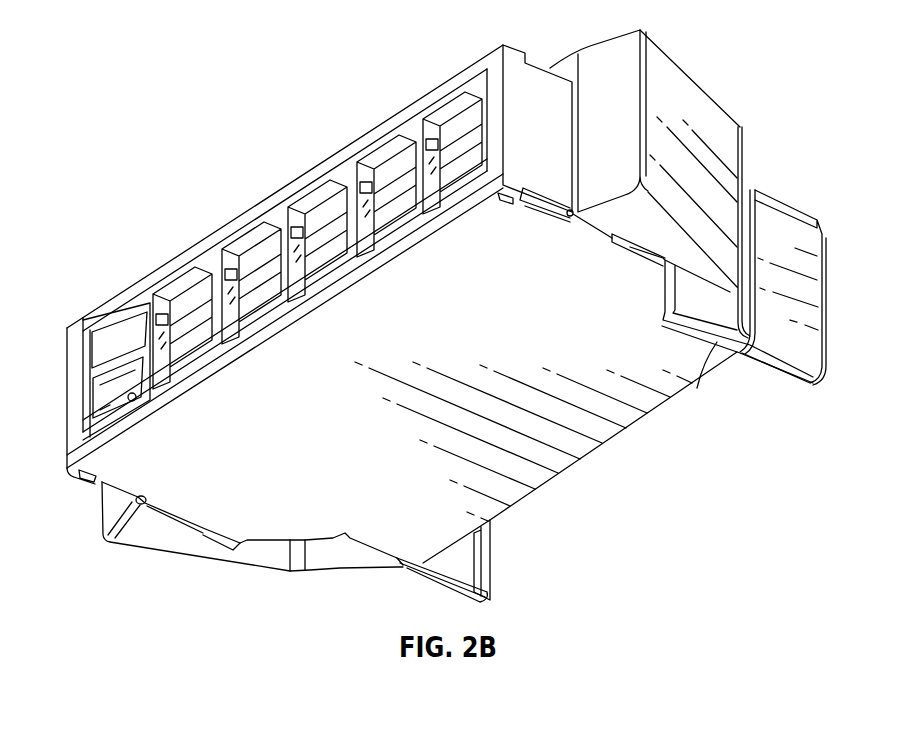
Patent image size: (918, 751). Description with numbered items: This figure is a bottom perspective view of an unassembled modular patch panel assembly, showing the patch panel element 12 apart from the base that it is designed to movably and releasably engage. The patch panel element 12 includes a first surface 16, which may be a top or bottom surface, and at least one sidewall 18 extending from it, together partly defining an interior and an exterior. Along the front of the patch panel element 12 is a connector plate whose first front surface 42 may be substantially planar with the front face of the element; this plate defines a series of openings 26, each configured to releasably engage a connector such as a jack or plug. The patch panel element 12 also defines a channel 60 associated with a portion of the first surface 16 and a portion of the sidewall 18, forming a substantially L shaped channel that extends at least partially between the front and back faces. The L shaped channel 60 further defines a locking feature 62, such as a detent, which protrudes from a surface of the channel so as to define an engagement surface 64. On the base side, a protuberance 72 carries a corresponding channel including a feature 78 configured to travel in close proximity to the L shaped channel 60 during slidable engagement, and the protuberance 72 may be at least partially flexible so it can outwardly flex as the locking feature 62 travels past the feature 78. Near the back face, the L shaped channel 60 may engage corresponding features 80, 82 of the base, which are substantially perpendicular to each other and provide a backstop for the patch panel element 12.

The patch panel element 12 is at (537, 150).
The first surface 16 is at (363, 459).
The sidewall 18 is at (522, 116).
The opening 26 is at (178, 288).
The first front surface 42 is at (404, 122).
The channel 60 is at (548, 198).
The locking feature 62 is at (570, 216).
The engagement surface 64 is at (572, 214).
The protuberance 72 is at (695, 128).
The feature 78 is at (613, 234).
The feature 80 is at (787, 382).
The feature 82 is at (478, 548).